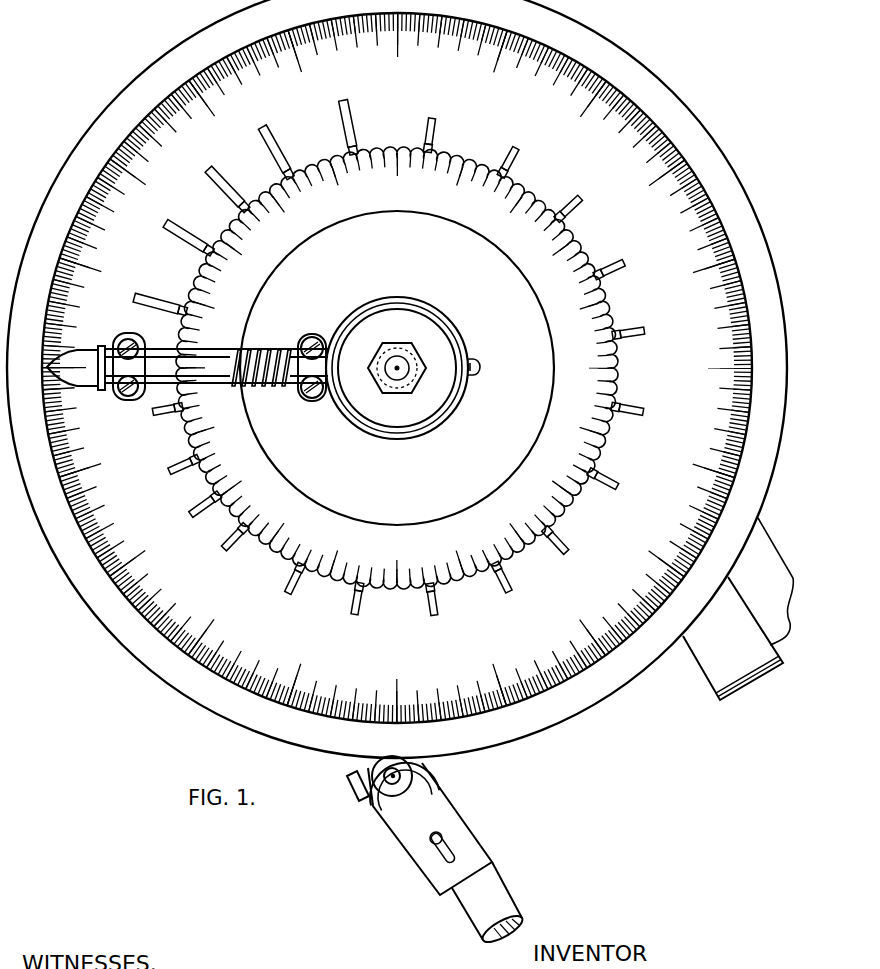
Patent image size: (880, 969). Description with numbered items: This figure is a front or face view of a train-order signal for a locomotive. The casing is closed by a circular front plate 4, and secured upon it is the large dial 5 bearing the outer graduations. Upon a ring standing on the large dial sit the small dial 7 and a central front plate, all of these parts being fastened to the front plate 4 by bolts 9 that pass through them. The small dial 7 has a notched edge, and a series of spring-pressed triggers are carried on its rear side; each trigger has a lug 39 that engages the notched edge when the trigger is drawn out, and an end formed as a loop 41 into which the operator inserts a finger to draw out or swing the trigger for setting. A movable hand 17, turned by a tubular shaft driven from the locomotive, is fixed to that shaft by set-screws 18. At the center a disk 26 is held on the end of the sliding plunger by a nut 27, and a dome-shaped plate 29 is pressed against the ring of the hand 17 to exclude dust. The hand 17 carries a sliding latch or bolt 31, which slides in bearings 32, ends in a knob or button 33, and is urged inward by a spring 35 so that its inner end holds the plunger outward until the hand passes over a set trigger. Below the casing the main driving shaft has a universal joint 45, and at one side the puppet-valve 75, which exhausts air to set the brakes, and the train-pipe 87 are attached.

The front plate 4 is at (652, 87).
The large dial 5 is at (740, 447).
The small dial 7 is at (515, 211).
The bolts 9 is at (456, 271).
The movable hand 17 is at (278, 349).
The set-screws 18 is at (472, 361).
The disk 26 is at (394, 313).
The nut 27 is at (396, 350).
The dome-shaped plate 29 is at (442, 416).
The sliding latch or bolt 31 is at (216, 366).
The bearings 32 is at (140, 400).
The knob or button 33 is at (101, 385).
The spring 35 is at (272, 389).
The lug 39 is at (238, 208).
The loop 41 is at (641, 333).
The universal joint 45 is at (353, 792).
The puppet-valve 75 is at (710, 692).
The train-pipe 87 is at (761, 546).